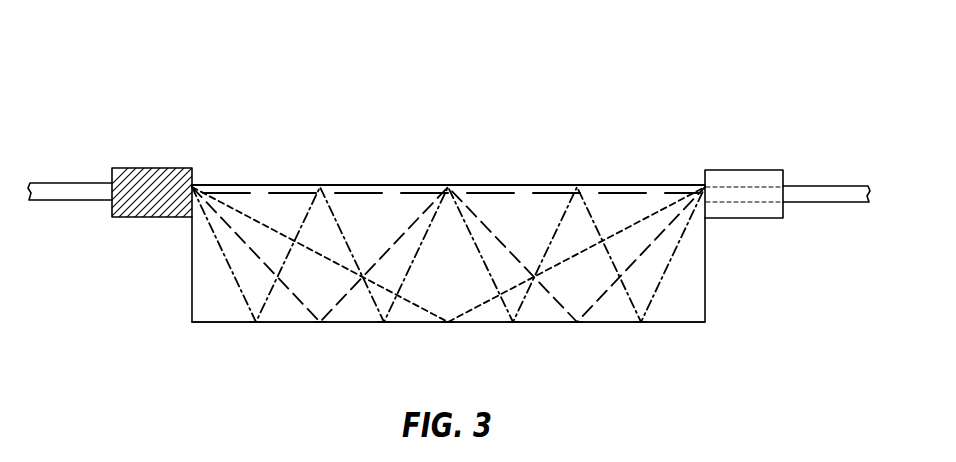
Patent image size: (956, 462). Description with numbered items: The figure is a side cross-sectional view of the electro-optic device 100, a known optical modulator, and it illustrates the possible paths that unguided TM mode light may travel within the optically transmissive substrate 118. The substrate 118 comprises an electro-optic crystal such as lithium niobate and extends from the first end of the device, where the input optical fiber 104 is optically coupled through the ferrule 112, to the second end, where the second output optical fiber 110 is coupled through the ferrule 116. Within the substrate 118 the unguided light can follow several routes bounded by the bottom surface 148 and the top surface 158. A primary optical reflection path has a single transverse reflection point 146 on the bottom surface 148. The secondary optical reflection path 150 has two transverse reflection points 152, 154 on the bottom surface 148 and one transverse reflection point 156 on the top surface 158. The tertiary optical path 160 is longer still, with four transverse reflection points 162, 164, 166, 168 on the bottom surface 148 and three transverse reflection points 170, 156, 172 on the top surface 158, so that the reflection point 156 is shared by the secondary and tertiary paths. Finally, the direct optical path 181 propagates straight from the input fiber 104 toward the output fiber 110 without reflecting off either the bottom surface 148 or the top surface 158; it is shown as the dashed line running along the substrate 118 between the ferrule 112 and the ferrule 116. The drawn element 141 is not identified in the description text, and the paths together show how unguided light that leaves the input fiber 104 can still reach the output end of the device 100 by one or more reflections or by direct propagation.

The electro-optic device 100 is at (561, 54).
The input optical fiber 104 is at (65, 183).
The second output optical fiber 110 is at (825, 186).
The ferrule 112 is at (137, 168).
The ferrule 116 is at (757, 170).
The optically transmissive substrate 118 is at (192, 267).
The short-dashed light ray 141 is at (662, 200).
The transverse reflection point 146 is at (448, 322).
The bottom surface 148 is at (205, 322).
The secondary optical reflection path 150 is at (492, 230).
The transverse reflection point 152 is at (320, 322).
The transverse reflection point 154 is at (577, 322).
The transverse reflection point 156 is at (448, 187).
The top surface 158 is at (240, 184).
The tertiary optical path 160 is at (343, 225).
The transverse reflection point 162 is at (256, 322).
The transverse reflection point 164 is at (384, 322).
The transverse reflection point 166 is at (513, 322).
The transverse reflection point 168 is at (641, 322).
The transverse reflection point 170 is at (318, 187).
The transverse reflection point 172 is at (577, 187).
The direct optical path 181 is at (608, 193).